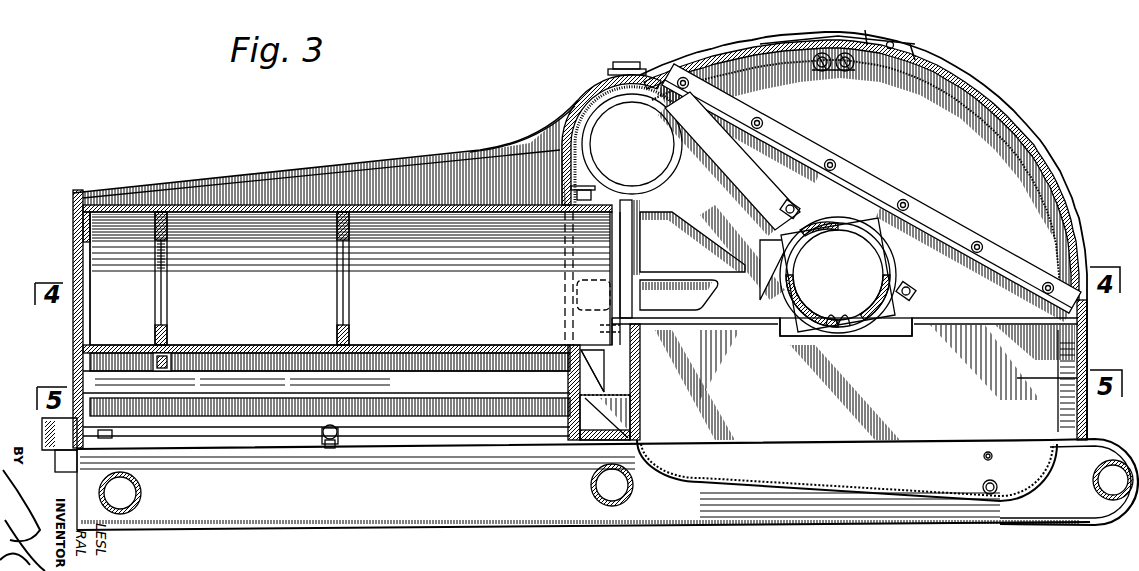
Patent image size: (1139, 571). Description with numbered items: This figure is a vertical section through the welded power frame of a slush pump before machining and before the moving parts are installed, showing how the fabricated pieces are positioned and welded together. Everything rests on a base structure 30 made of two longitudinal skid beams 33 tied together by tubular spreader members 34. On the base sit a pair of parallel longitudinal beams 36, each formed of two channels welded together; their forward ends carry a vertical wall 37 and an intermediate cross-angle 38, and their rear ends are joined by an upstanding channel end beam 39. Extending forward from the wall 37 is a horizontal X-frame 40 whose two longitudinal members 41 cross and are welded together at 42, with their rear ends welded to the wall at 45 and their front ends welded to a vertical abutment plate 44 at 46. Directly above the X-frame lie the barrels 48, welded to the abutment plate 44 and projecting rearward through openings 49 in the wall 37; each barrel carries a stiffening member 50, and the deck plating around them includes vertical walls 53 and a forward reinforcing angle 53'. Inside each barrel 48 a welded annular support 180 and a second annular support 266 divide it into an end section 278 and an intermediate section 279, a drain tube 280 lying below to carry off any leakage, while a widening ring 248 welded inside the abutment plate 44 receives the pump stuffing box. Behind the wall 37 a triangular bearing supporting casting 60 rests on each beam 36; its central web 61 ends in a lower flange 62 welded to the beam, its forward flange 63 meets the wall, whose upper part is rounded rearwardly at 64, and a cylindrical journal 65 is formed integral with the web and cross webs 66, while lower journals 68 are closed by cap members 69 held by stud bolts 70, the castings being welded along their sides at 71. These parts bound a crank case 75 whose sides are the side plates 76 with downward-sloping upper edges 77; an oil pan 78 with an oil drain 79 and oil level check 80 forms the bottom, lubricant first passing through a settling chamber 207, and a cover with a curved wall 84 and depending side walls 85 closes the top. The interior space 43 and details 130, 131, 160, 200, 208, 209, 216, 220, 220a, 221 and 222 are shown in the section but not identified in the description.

The base structure 30 is at (445, 505).
The longitudinal skid beam 33 is at (310, 525).
The tubular spreader member 34 is at (150, 502).
The longitudinal beam 36 is at (860, 422).
The vertical wall 37 is at (565, 372).
The intermediate cross-angle 38 is at (570, 430).
The end beam 39 is at (1088, 330).
The X-frame 40 is at (383, 395).
The longitudinal member 41 is at (172, 380).
The weld 42 is at (250, 380).
The cylinder interior 43 is at (355, 278).
The abutment plate 44 is at (72, 194).
The weld 45 is at (570, 350).
The weld 46 is at (75, 368).
The barrel 48 is at (287, 195).
The opening 49 is at (576, 196).
The stiffening member 50 is at (352, 158).
The vertical wall 53 is at (358, 453).
The forward reinforcing angle 53' is at (168, 465).
The bearing supporting casting 60 is at (708, 322).
The central vertical web 61 is at (713, 202).
The lower flange 62 is at (671, 315).
The flange 63 is at (643, 295).
The rounded portion 64 is at (585, 93).
The cylindrical journal 65 is at (680, 138).
The cross web 66 is at (667, 277).
The journal 68 is at (790, 300).
The cap member 69 is at (882, 272).
The stud bolt 70 is at (790, 206).
The weld 71 is at (906, 326).
The crank case 75 is at (972, 122).
The side plate 76 is at (776, 148).
The sloping upper edge 77 is at (717, 100).
The oil pan 78 is at (813, 500).
The oil drain 79 is at (980, 486).
The oil level check 80 is at (994, 458).
The curved wall 84 is at (1052, 156).
The depending side wall 85 is at (1035, 215).
The bracket 130 is at (846, 328).
The bracket 131 is at (828, 326).
The cover segment 160 is at (840, 40).
The annular support 180 is at (340, 203).
The bore 200 is at (620, 160).
The settling chamber 207 is at (624, 357).
The box 208 is at (645, 378).
The box bottom 209 is at (648, 400).
The gusset 216 is at (590, 356).
The cap 220 is at (609, 72).
The cap top 220a is at (635, 50).
The curved plate 221 is at (575, 112).
The washer 222 is at (572, 188).
The widening ring 248 is at (72, 224).
The annular support 266 is at (158, 262).
The end section 278 is at (114, 232).
The intermediate section 279 is at (225, 230).
The drain tube 280 is at (160, 370).